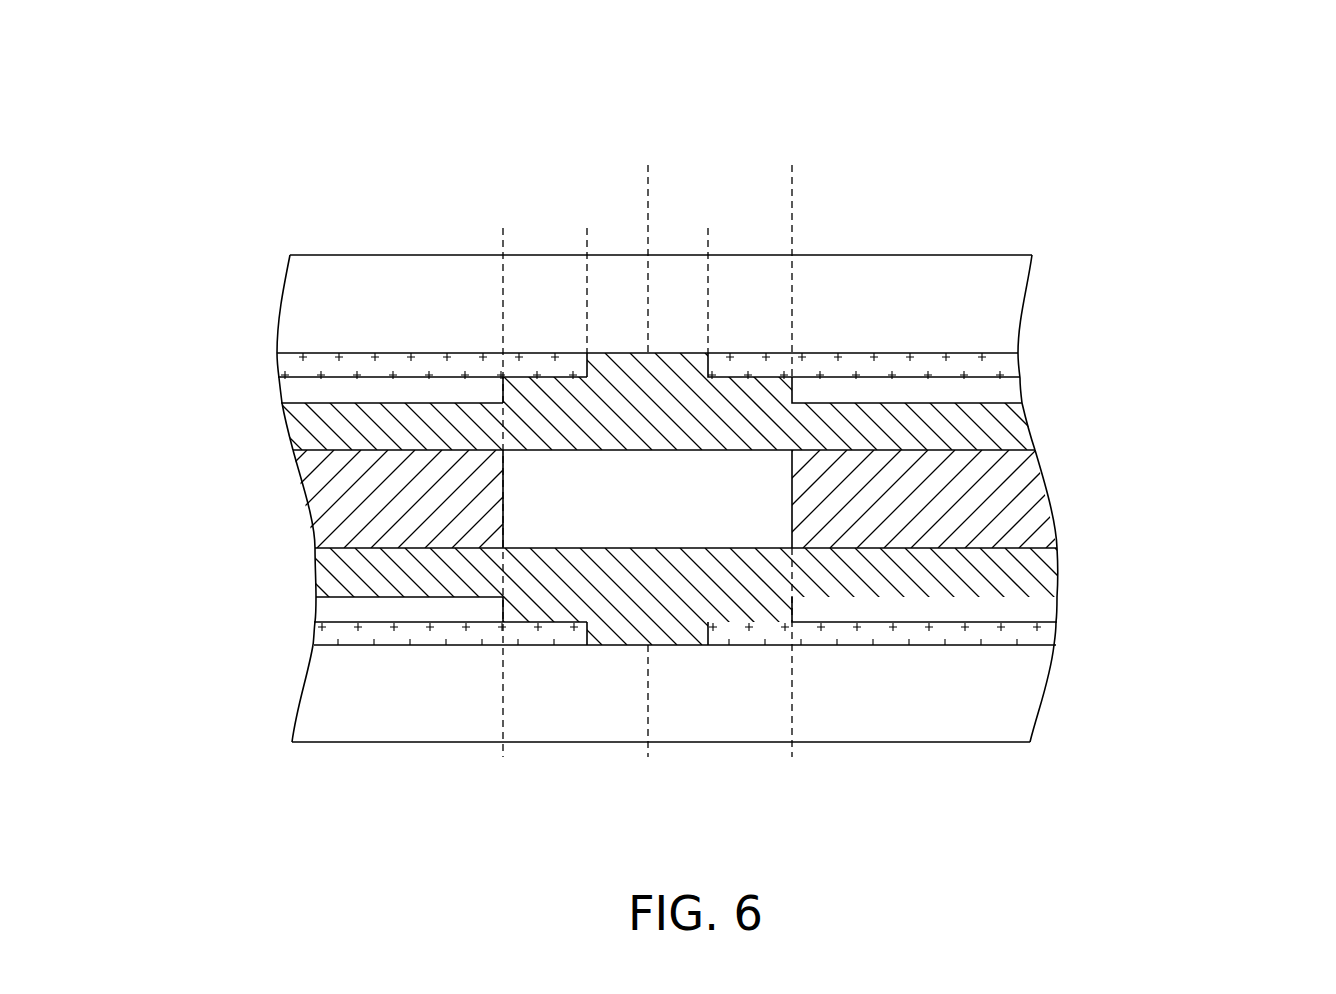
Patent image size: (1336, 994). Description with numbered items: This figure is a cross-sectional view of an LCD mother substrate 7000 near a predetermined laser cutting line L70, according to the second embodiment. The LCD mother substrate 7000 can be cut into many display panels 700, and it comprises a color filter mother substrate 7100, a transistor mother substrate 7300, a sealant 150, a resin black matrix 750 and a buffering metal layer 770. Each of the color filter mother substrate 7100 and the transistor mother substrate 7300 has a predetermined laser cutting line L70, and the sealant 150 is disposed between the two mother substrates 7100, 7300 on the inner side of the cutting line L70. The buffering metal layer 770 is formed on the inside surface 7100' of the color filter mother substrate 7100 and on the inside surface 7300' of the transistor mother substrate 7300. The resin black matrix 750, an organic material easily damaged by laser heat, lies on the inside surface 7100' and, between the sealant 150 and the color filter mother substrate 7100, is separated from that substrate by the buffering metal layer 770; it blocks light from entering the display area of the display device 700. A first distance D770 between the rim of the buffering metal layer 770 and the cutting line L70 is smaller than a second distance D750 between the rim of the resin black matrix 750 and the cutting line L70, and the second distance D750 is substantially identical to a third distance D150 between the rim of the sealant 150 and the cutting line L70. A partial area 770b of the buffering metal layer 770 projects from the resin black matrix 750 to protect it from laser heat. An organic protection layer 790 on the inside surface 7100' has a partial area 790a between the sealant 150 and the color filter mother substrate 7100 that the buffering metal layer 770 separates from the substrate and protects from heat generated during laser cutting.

The LCD mother substrate 7000 is at (1318, 67).
The display panel 700 is at (374, 156).
The color filter mother substrate 7100 is at (733, 304).
The transistor mother substrate 7300 is at (741, 693).
The inside surface of the color filter mother substrate 7100' is at (938, 296).
The inside surface of the transistor mother substrate 7300' is at (903, 692).
The buffering metal layer 770 is at (285, 363).
The resin black matrix 750 is at (1015, 392).
The organic protection layer 790 is at (1023, 428).
The sealant 150 is at (1045, 507).
The predetermined laser cutting line L70 is at (647, 302).
The partial area of the buffering metal layer 770b is at (575, 241).
The first distance D770 is at (696, 241).
The second distance D750 is at (780, 177).
The partial area of the organic protection layer 790a is at (491, 795).
The third distance D150 is at (780, 795).